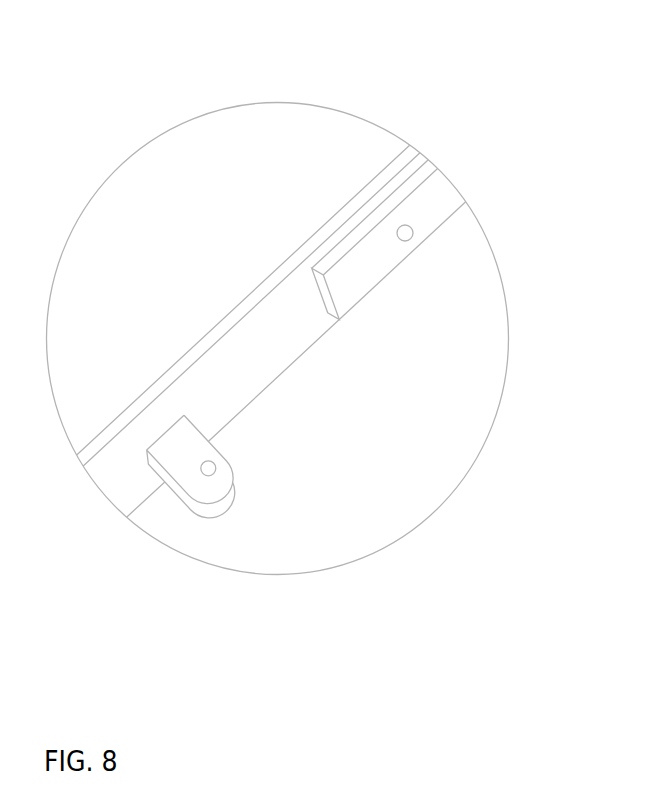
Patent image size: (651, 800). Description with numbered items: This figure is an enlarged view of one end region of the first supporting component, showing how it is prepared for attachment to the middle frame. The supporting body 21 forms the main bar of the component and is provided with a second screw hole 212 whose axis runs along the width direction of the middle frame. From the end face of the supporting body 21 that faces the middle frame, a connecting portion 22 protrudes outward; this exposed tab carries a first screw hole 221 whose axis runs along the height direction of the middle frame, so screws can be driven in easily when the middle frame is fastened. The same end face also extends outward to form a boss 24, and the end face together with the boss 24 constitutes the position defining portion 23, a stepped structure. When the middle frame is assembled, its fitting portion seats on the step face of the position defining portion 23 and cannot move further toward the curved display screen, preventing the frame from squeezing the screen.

The supporting body 21 is at (402, 570).
The connecting portion 22 is at (180, 447).
The first screw hole 221 is at (318, 668).
The position defining portion 23 is at (330, 255).
The boss 24 is at (487, 537).
The second screw hole 212 is at (548, 430).